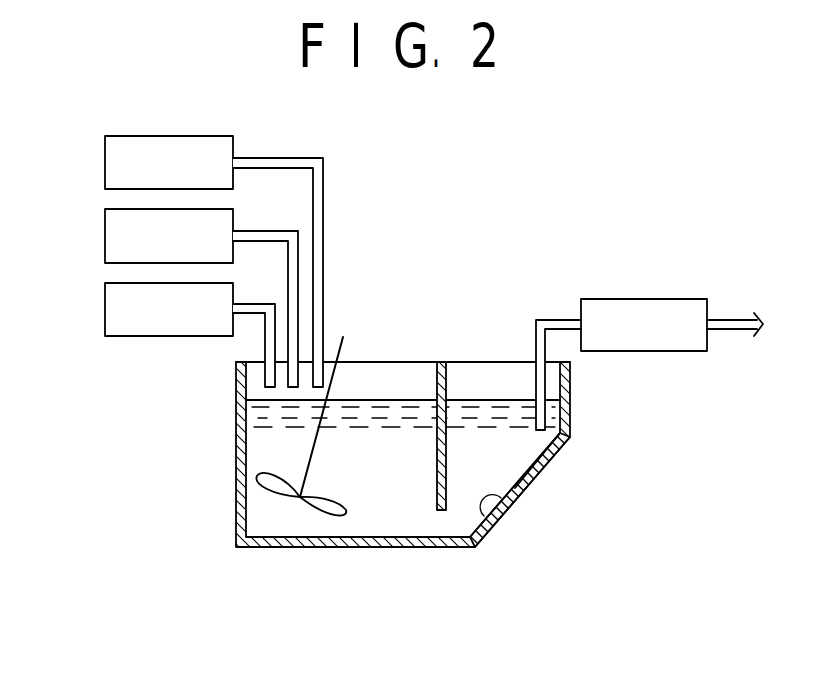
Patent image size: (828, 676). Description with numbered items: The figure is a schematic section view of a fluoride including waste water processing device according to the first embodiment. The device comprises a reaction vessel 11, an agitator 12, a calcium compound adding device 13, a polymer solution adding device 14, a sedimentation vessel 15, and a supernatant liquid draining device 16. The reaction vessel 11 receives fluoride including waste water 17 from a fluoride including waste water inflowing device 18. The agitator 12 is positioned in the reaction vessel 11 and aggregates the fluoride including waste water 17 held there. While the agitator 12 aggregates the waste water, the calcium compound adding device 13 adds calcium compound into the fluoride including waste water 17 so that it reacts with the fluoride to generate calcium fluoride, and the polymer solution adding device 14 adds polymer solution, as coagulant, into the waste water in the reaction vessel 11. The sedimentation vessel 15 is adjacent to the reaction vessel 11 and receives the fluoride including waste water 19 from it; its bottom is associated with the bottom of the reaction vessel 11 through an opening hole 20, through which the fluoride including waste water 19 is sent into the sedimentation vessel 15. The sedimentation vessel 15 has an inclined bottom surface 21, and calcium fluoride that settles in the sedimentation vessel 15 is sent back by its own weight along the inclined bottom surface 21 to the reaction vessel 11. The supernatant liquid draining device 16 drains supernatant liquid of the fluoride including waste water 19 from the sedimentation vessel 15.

The reaction vessel 11 is at (238, 516).
The agitator 12 is at (263, 477).
The calcium compound adding device 13 is at (172, 337).
The polymer solution adding device 14 is at (105, 239).
The sedimentation vessel 15 is at (541, 476).
The supernatant liquid draining device 16 is at (641, 299).
The fluoride including waste water 17 is at (383, 472).
The fluoride including waste water inflowing device 18 is at (105, 163).
The fluoride including waste water 19 is at (510, 456).
The opening hole 20 is at (442, 527).
The inclined bottom surface 21 is at (497, 523).